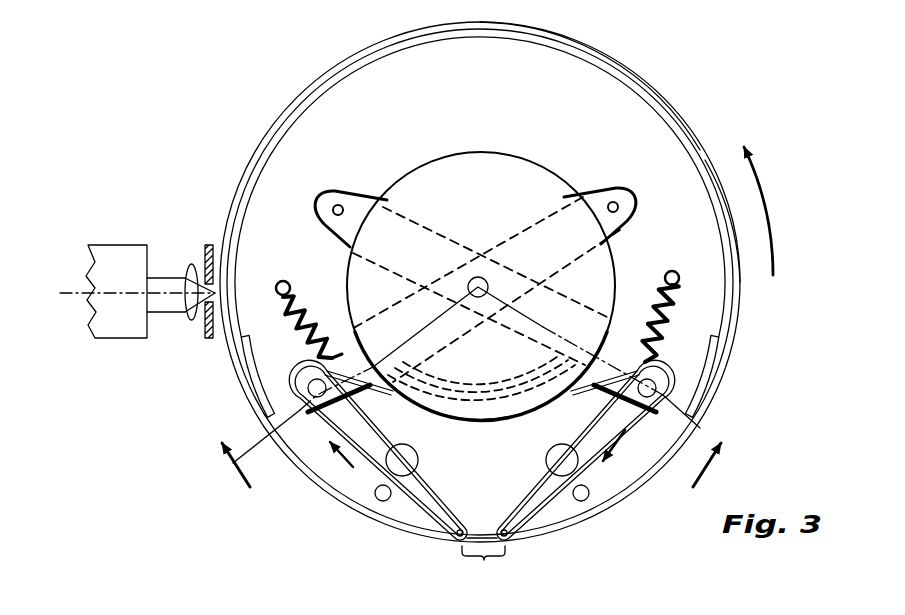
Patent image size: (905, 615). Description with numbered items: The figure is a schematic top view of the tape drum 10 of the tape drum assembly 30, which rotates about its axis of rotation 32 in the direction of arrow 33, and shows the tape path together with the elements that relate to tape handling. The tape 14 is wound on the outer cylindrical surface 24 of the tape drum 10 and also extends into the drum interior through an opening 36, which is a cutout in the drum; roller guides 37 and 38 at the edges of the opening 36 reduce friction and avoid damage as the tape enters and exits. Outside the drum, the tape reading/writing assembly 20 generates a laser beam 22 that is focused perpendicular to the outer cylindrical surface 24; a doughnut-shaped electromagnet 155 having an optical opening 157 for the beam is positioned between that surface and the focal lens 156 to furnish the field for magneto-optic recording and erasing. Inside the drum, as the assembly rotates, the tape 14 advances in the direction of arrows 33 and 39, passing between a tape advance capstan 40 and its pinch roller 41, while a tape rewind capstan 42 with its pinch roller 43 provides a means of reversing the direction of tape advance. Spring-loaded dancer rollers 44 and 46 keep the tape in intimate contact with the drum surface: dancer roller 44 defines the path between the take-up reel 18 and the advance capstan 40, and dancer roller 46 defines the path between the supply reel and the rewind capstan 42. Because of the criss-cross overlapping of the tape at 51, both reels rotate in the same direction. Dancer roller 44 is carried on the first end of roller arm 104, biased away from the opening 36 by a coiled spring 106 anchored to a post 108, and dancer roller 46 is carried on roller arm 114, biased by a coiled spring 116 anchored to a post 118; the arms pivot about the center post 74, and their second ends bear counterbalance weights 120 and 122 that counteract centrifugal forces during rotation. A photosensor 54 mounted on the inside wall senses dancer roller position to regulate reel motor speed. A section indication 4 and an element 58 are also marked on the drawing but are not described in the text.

The tape drum 10 is at (595, 57).
The tape 14 is at (283, 113).
The take-up reel 18 is at (530, 176).
The tape reading/writing assembly 20 is at (113, 330).
The laser beam 22 is at (125, 243).
The outer cylindrical surface 24 is at (497, 25).
The tape drum assembly 30 is at (680, 98).
The axis of rotation 32 is at (472, 280).
The arrow indicating direction of rotation 33 is at (770, 200).
The opening 36 is at (483, 566).
The roller guide 37 is at (453, 541).
The roller guide 38 is at (510, 541).
The arrow indicating direction of tape advance 39 is at (343, 468).
The tape advance capstan 40 is at (410, 458).
The pinch roller 41 is at (380, 499).
The tape rewind capstan 42 is at (554, 458).
The pinch roller 43 is at (585, 498).
The dancer roller 44 is at (328, 398).
The dancer roller 46 is at (636, 398).
The criss-cross overlapping of tape 51 is at (520, 383).
The photosensor 54 is at (724, 348).
The left stop segment 58 is at (258, 410).
The center post 74 is at (482, 277).
The roller arm 104 is at (320, 356).
The coiled spring 106 is at (305, 305).
The post 108 is at (283, 280).
The roller arm 114 is at (648, 357).
The coiled spring 116 is at (660, 275).
The post 118 is at (675, 272).
The counterbalance weight 120 is at (338, 205).
The counterbalance weight 122 is at (620, 206).
The doughnut-shaped electromagnet 155 is at (193, 262).
The focal lens 156 is at (206, 250).
The optical opening 157 is at (207, 335).
The section line 4- 4 is at (468, 404).